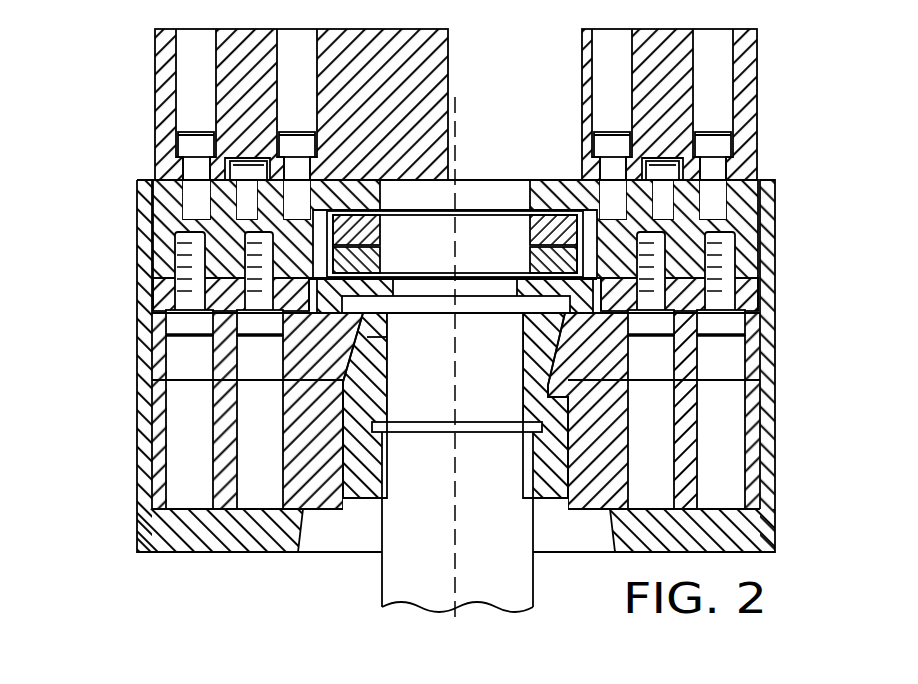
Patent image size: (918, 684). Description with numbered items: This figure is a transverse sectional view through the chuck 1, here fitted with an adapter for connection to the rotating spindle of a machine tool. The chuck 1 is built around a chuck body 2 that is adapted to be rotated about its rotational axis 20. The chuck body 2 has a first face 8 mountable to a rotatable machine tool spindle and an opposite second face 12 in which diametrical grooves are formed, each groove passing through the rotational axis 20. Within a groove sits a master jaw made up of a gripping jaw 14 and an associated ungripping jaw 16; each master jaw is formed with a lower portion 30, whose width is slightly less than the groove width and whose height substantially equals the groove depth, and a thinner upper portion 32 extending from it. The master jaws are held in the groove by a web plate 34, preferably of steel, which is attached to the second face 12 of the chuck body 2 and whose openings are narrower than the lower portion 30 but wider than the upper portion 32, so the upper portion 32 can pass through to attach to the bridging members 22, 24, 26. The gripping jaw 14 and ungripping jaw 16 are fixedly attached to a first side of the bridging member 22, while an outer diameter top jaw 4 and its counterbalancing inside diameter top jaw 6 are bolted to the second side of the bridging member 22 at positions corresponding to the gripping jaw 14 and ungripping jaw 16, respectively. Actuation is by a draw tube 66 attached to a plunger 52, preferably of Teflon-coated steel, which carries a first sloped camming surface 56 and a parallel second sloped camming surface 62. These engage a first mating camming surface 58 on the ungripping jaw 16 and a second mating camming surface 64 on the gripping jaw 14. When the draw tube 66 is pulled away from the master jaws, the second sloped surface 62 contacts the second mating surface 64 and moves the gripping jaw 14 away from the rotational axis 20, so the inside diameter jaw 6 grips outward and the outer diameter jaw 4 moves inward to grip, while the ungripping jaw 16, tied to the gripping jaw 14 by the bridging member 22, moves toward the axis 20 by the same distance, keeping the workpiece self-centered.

The chuck 1 is at (112, 134).
The chuck body 2 is at (155, 426).
The outer diameter (OD) top jaw 4 is at (155, 72).
The inside diameter (ID) top jaw 6 is at (748, 80).
The first face 8 is at (597, 513).
The second face 12 is at (417, 311).
The gripping jaw 14 is at (760, 327).
The ungripping jaw 16 is at (165, 323).
The rotational axis 20 is at (457, 158).
The bridging member 22 is at (735, 205).
The bridging member 24 is at (535, 226).
The bridging member 26 is at (547, 265).
The lower portion 30 is at (153, 360).
The upper portion 32 is at (162, 285).
The web plate 34 is at (358, 283).
The plunger 52 is at (363, 485).
The first sloped camming surface 56 is at (349, 364).
The first mating camming surface 58 is at (367, 337).
The second sloped camming surface 62 is at (548, 397).
The second mating camming surface 64 is at (553, 333).
The draw tube 66 is at (513, 578).